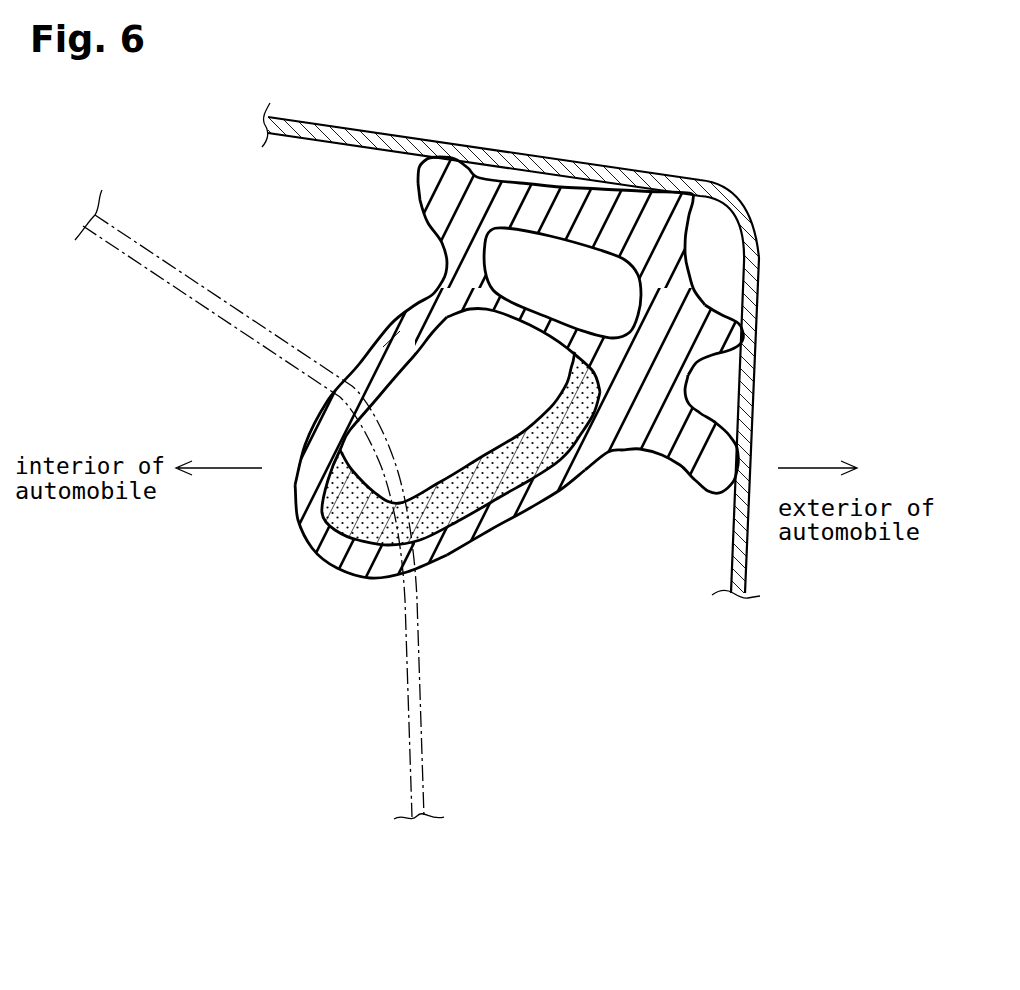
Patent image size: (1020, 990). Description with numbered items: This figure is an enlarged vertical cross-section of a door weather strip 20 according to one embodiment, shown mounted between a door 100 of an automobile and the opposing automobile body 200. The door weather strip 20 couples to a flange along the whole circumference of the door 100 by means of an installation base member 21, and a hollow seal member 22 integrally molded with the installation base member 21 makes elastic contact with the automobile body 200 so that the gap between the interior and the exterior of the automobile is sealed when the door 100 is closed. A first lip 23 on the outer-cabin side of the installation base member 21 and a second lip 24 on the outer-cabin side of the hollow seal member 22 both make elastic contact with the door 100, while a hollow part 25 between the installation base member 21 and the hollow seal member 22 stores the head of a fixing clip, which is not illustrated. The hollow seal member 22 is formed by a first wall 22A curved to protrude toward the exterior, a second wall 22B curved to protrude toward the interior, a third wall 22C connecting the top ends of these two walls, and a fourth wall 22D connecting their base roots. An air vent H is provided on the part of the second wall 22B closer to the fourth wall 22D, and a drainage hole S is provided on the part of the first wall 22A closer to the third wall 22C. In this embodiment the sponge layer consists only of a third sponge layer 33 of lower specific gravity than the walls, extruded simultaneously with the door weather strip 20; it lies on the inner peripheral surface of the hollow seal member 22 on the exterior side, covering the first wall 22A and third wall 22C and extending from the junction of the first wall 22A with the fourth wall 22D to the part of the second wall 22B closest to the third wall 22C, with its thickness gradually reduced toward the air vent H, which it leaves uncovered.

The door 100 is at (352, 128).
The automobile body 200 is at (132, 258).
The door weather strip 20 is at (461, 378).
The installation base member 21 is at (485, 190).
The hollow seal member 22 is at (492, 378).
The first wall 22A is at (540, 493).
The second wall 22B is at (432, 295).
The third wall 22C is at (337, 557).
The fourth wall 22D is at (530, 315).
The first lip 23 is at (720, 322).
The second lip 24 is at (720, 435).
The hollow part 25 is at (600, 275).
The third sponge layer 33 is at (567, 462).
The drainage hole S is at (488, 515).
The air vent H is at (380, 347).